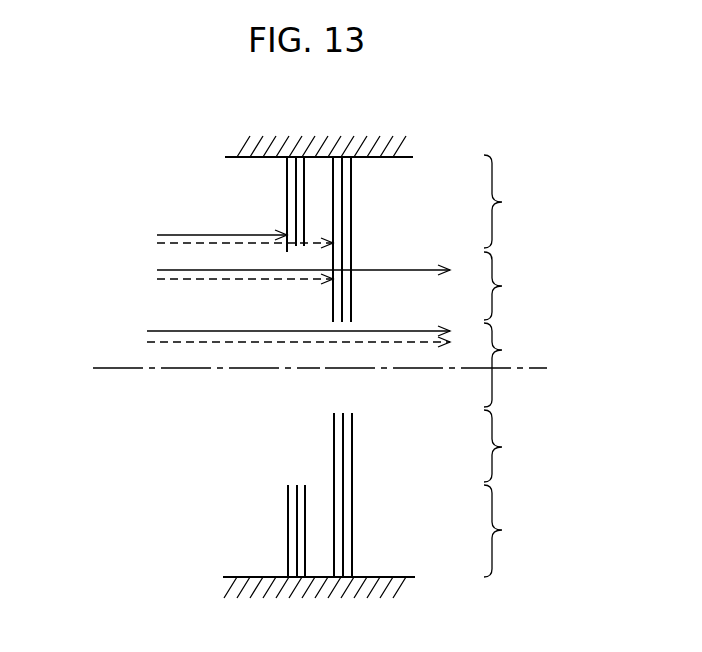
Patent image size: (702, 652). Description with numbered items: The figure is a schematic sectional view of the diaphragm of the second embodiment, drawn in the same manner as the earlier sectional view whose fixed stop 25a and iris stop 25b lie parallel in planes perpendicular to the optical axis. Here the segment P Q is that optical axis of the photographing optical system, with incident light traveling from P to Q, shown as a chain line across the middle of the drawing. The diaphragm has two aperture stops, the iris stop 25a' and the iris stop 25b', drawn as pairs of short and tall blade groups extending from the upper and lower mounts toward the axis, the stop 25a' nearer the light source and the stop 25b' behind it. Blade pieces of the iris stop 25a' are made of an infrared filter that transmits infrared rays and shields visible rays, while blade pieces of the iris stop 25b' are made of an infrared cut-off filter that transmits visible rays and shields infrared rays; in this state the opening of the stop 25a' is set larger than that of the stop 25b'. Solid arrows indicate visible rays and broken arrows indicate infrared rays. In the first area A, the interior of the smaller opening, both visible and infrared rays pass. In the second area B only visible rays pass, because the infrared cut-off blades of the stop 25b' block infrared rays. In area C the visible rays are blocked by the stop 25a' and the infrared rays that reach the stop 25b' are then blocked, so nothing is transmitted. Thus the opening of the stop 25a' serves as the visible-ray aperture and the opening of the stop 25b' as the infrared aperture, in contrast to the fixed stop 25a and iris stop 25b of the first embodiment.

The iris stop 25a' is at (255, 367).
The iris stop 25b' is at (388, 367).
The fixed stop 25a is at (255, 367).
The iris stop 25b is at (388, 367).
The optical axis start point P is at (193, 368).
The optical axis end point Q is at (446, 368).
The first area A is at (504, 365).
The second area B is at (504, 367).
The area C is at (504, 366).